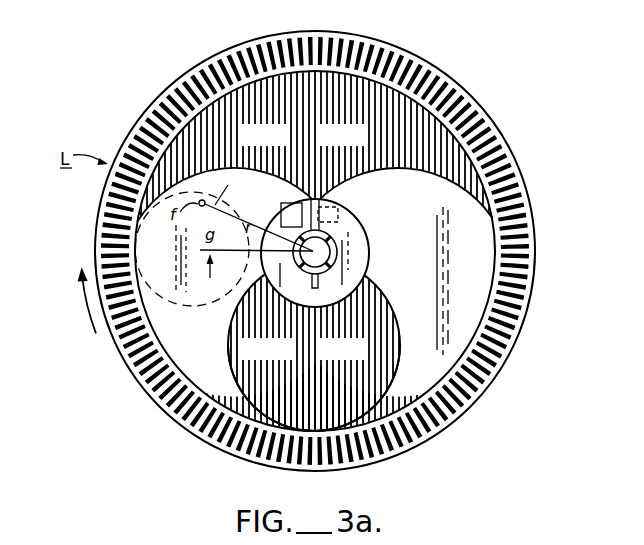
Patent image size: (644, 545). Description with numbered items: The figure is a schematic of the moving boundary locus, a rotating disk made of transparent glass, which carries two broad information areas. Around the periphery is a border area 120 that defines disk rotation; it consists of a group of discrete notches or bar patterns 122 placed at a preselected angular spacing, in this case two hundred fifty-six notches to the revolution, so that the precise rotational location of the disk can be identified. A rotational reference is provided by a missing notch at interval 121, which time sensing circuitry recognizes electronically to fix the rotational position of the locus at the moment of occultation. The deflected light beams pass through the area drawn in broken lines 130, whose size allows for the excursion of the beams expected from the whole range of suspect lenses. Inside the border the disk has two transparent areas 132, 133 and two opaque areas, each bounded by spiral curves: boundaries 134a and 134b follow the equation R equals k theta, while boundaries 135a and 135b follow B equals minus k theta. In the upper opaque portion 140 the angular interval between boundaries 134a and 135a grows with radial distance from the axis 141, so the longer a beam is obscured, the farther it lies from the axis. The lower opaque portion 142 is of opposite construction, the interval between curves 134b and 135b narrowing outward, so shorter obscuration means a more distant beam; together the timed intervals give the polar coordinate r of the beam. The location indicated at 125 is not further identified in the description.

The border area 120 is at (515, 245).
The missing notch interval 121 is at (315, 457).
The notches 122 is at (417, 435).
The unhatched region 125 is at (470, 236).
The beam passage area 130 is at (162, 296).
The transparent area 132 is at (210, 369).
The transparent area 133 is at (421, 266).
The boundary 134a is at (222, 168).
The boundary 135a is at (345, 175).
The boundary 134b is at (227, 348).
The boundary 135b is at (400, 353).
The upper opaque portion 140 is at (367, 98).
The axis 141 is at (322, 241).
The lower opaque portion 142 is at (282, 403).